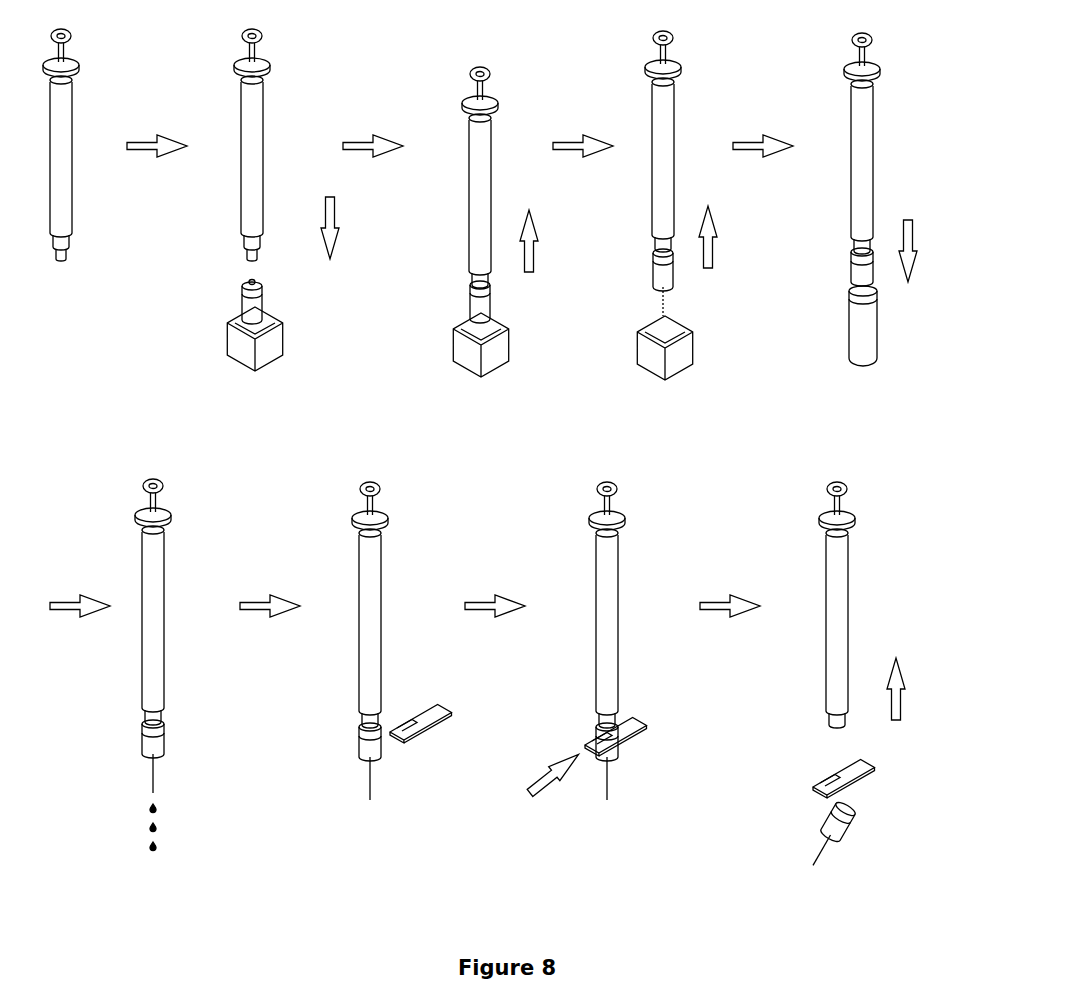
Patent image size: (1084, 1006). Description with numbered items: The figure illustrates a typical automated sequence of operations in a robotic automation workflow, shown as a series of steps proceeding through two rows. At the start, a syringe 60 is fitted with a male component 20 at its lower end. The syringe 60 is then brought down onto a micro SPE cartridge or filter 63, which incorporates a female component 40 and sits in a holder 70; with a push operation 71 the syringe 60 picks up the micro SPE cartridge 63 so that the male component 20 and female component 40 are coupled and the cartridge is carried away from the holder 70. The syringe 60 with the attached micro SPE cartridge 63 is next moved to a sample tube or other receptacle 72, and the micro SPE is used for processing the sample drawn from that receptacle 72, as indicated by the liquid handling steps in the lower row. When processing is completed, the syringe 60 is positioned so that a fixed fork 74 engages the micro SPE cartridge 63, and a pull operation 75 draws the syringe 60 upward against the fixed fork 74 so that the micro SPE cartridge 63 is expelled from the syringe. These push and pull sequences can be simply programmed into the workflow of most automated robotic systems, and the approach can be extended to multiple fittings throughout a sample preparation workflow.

The syringe 60 is at (70, 212).
The male component 20 is at (68, 248).
The push operation 71 is at (335, 218).
The female component 40 is at (260, 297).
The micro SPE cartridge or filter 63 is at (243, 315).
The holder 70 is at (280, 353).
The sample tube or other receptacle 72 is at (858, 333).
The fixed fork 74 is at (630, 735).
The pull operation 75 is at (902, 703).